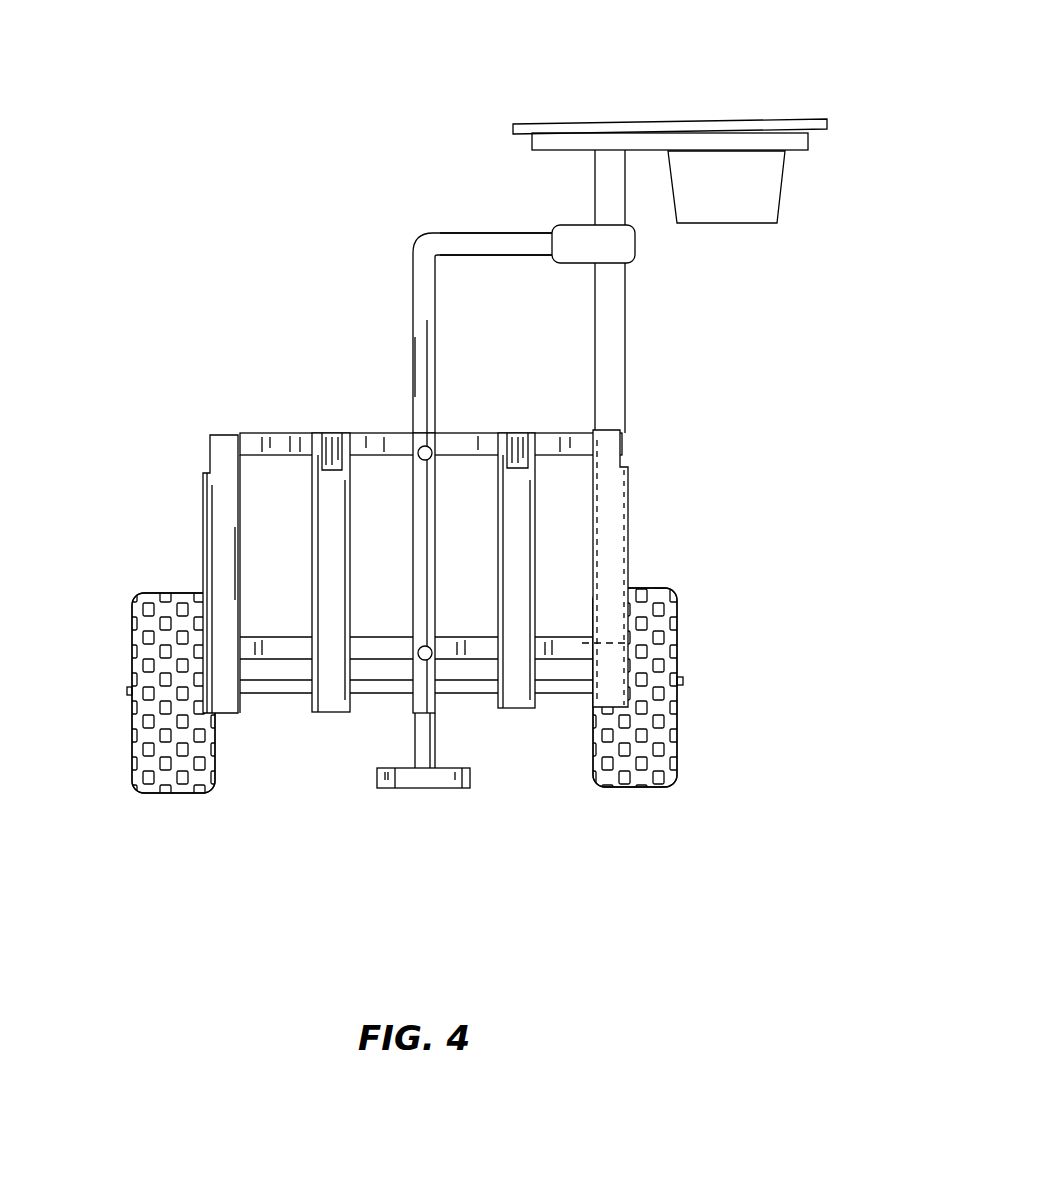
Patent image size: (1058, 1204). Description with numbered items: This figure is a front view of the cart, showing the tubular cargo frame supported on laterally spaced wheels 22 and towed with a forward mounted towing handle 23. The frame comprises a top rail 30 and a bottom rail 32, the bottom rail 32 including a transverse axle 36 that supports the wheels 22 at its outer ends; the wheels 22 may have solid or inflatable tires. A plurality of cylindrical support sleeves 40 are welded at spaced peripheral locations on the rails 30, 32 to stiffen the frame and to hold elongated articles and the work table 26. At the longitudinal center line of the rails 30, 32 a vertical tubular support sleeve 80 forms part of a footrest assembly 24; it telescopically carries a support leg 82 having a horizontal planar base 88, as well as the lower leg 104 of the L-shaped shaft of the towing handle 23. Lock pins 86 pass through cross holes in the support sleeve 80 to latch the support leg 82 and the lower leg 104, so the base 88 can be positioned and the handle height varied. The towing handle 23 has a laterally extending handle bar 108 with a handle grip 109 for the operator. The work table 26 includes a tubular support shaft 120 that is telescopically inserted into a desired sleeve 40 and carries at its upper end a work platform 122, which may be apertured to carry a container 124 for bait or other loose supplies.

The wheels 22 is at (147, 782).
The towing handle 23 is at (411, 280).
The footrest assembly 24 is at (494, 816).
The work table 26 is at (728, 137).
The top rail 30 is at (448, 541).
The bottom rail 32 is at (560, 647).
The transverse axle 36 is at (267, 697).
The cylindrical support sleeve 40 is at (213, 527).
The vertical tubular support sleeve 80 is at (385, 518).
The support leg 82 is at (430, 732).
The lock pins 86 is at (418, 653).
The horizontal planar base 88 is at (467, 787).
The lower leg 104 is at (427, 377).
The handle bar 108 is at (478, 242).
The handle grip 109 is at (607, 243).
The tubular support shaft 120 is at (613, 373).
The work platform 122 is at (793, 120).
The container 124 is at (765, 182).